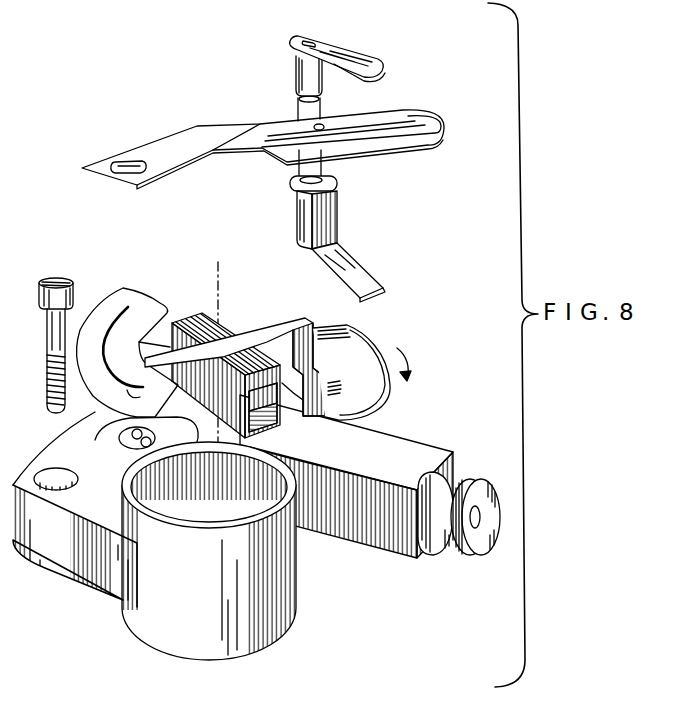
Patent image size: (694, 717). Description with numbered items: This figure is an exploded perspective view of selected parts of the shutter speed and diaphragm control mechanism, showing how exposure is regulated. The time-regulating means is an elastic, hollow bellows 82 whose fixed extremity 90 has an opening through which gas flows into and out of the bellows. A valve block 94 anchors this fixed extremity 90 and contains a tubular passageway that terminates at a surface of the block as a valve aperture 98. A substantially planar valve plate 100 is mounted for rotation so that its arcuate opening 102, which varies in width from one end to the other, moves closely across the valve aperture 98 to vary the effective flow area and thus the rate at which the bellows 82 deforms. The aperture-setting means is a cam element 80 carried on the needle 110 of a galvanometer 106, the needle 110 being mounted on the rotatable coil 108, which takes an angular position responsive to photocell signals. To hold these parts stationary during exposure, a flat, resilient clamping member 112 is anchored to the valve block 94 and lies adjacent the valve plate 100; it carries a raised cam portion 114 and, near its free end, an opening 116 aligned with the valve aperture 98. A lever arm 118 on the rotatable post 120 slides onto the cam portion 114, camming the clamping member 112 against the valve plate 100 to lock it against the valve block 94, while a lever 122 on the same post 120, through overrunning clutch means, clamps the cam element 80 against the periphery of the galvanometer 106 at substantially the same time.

The cam element 80 is at (360, 343).
The bellows 82 is at (487, 488).
The fixed extremity 90 is at (462, 480).
The valve block 94 is at (400, 447).
The valve aperture 98 is at (120, 441).
The valve plate 100 is at (90, 395).
The arcuate opening 102 is at (157, 264).
The galvanometer 106 is at (162, 630).
The coil 108 is at (228, 412).
The needle 110 is at (241, 386).
The clamping member 112 is at (181, 138).
The cam portion 114 is at (314, 126).
The opening 116 is at (146, 168).
The lever arm 118 is at (360, 60).
The post 120 is at (296, 76).
The lever 122 is at (355, 268).